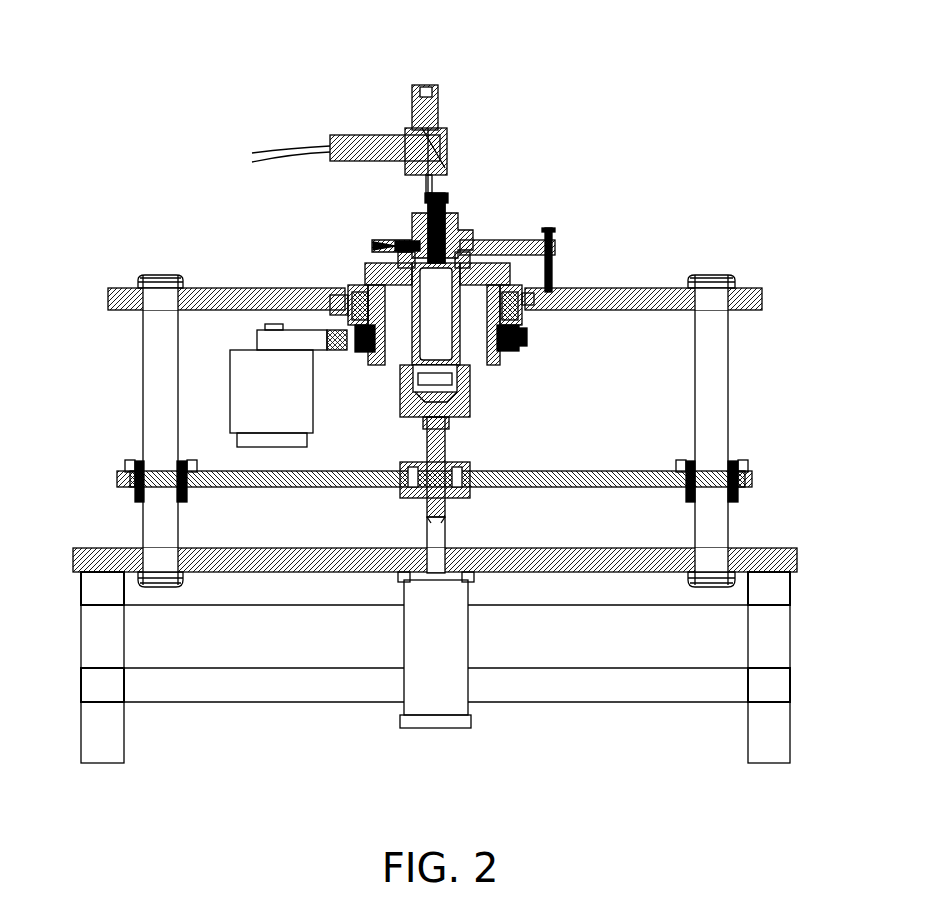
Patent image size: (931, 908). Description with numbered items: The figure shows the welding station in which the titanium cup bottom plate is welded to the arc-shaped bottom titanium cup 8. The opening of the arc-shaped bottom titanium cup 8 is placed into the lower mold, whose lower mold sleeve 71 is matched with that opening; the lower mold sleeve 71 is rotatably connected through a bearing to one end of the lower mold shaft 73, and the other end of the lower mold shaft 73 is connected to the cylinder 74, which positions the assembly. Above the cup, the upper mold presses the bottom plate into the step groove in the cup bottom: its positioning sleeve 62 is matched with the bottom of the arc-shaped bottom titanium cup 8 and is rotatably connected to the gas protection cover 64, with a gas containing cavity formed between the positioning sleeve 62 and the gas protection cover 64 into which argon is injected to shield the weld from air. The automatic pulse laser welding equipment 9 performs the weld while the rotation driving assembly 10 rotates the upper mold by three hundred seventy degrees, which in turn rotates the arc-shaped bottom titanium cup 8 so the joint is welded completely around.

The automatic pulse laser welding equipment 9 is at (420, 128).
The gas protection cover 64 is at (410, 217).
The positioning sleeve 62 is at (375, 267).
The arc-shaped bottom titanium cup 8 is at (470, 286).
The rotation driving assembly 10 is at (230, 383).
The lower mold sleeve 71 is at (470, 390).
The lower mold shaft 73 is at (445, 441).
The cylinder 74 is at (437, 646).